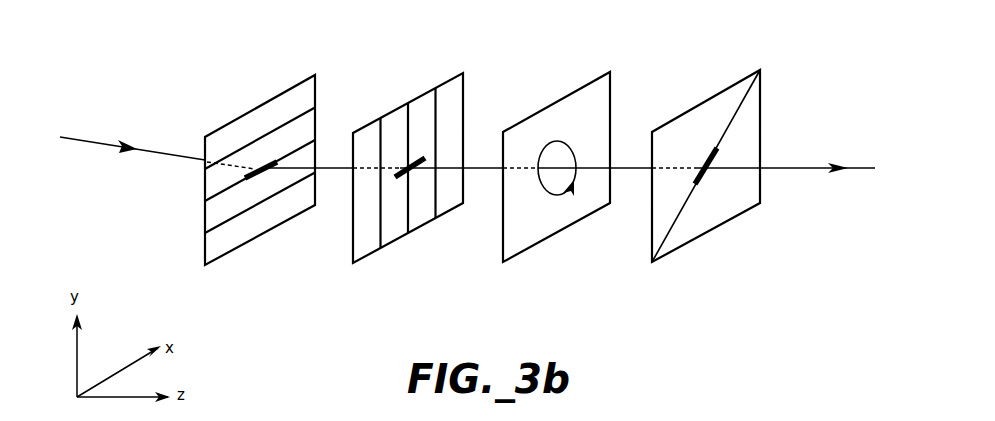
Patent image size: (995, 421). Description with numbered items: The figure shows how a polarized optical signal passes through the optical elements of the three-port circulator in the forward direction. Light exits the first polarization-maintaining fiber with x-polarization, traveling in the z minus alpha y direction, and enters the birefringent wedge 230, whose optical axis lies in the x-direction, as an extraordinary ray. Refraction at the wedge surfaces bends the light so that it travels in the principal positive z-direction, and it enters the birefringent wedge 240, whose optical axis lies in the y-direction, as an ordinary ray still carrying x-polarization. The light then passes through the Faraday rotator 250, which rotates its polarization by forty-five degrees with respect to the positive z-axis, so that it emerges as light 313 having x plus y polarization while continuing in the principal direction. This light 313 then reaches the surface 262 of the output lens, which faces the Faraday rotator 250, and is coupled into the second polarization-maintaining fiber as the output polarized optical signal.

The birefringent wedge 230 is at (272, 97).
The birefringent wedge 240 is at (422, 95).
The Faraday rotator 250 is at (568, 93).
The surface of lens 262 is at (718, 93).
The light 313 is at (704, 180).